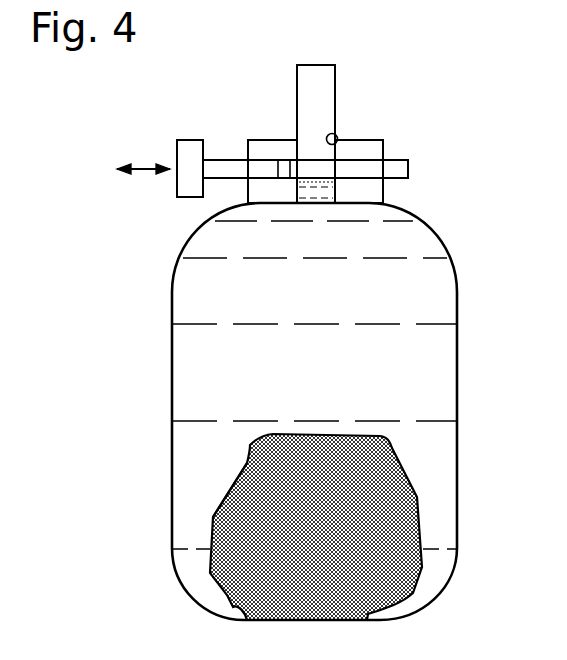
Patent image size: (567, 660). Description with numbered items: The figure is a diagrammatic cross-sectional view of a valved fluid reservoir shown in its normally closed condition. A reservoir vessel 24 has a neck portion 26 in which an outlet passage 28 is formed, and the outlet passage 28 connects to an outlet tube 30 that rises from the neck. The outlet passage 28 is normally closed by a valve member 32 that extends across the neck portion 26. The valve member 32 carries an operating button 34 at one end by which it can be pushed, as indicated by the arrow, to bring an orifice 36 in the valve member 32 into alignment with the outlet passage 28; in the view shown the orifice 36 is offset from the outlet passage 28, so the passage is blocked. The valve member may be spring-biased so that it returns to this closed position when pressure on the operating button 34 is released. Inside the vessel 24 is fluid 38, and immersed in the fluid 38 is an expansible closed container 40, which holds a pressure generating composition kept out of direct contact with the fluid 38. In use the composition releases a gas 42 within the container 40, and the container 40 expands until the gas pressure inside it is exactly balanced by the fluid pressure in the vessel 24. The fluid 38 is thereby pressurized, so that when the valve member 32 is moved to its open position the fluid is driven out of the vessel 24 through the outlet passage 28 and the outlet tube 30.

The reservoir vessel 24 is at (458, 328).
The neck portion 26 is at (376, 192).
The outlet passage 28 is at (337, 134).
The outlet tube 30 is at (337, 81).
The valve member 32 is at (401, 157).
The operating button 34 is at (190, 140).
The orifice 36 is at (283, 160).
The fluid 38 is at (198, 369).
The expansible closed container 40 is at (413, 484).
The gas 42 is at (238, 482).